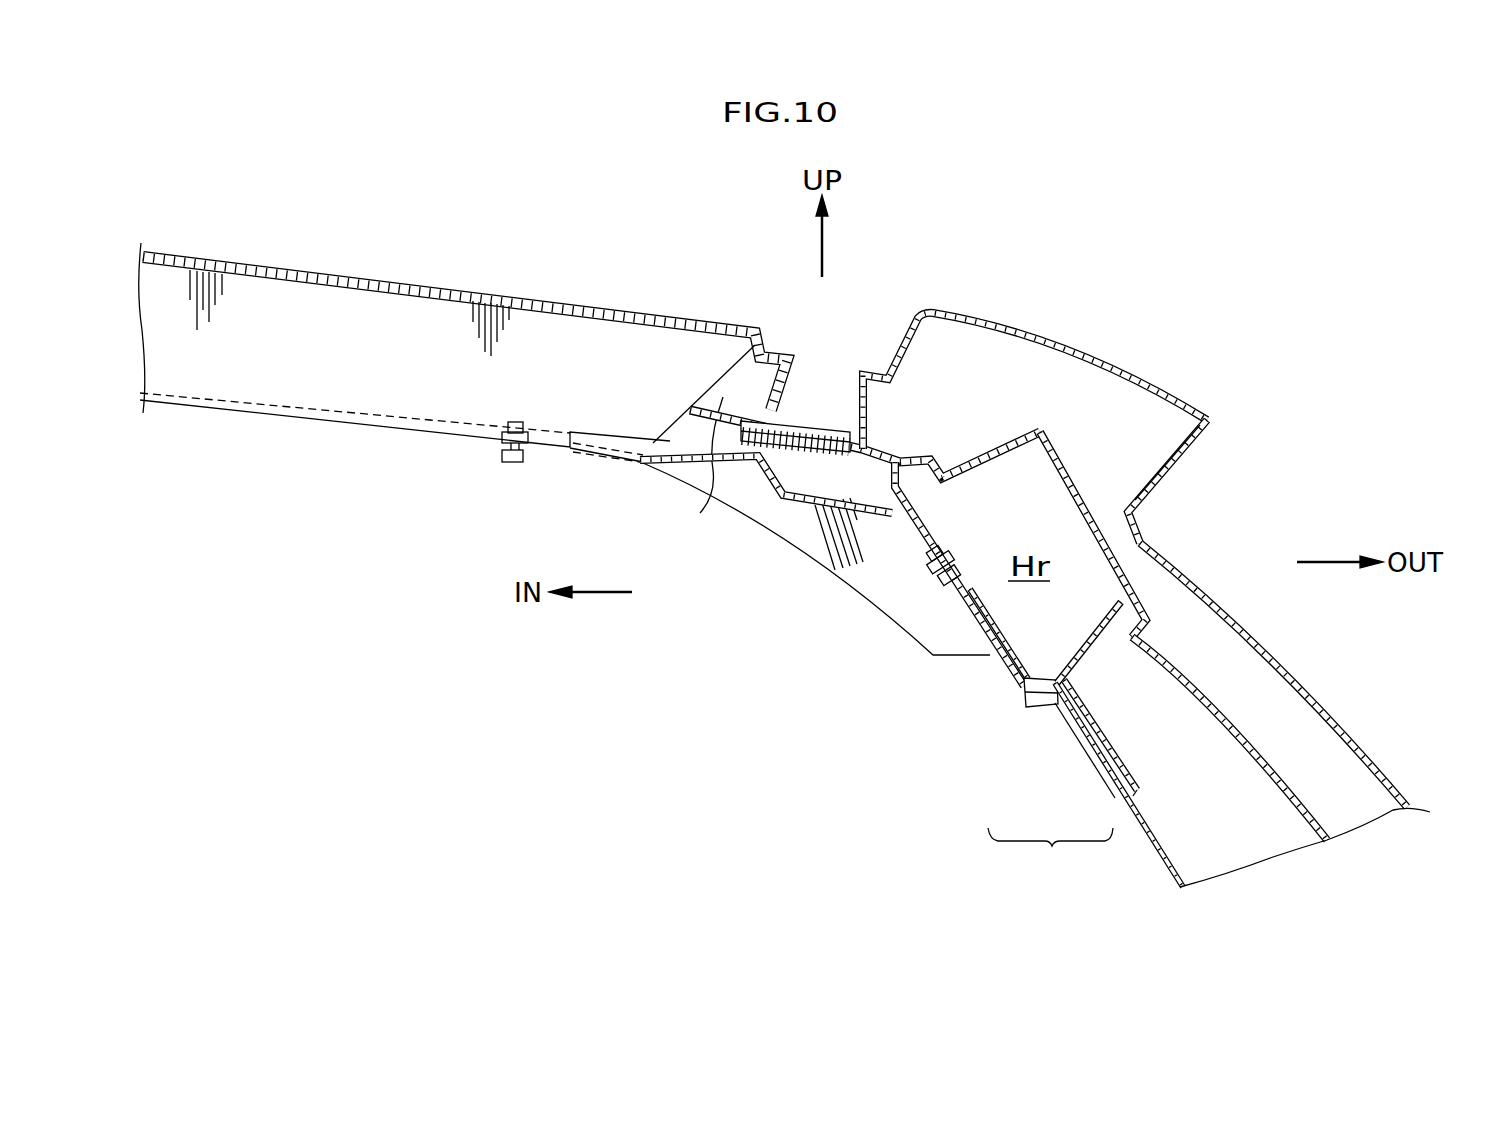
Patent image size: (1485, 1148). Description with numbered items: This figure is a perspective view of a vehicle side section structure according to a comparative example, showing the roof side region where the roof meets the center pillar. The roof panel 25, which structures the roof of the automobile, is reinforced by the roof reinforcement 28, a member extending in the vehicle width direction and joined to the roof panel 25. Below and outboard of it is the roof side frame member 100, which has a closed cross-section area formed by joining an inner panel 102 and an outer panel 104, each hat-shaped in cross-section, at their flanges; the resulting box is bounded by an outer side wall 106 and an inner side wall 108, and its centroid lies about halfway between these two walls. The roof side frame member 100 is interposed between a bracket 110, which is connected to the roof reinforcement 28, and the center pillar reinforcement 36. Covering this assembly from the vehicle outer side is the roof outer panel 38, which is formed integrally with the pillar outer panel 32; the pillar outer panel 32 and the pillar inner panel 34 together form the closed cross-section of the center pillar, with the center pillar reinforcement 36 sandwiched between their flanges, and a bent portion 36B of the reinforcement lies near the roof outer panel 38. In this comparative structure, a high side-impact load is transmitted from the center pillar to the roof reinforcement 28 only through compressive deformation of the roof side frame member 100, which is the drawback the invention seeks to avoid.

The roof panel 25 is at (397, 282).
The roof reinforcement 28 is at (321, 390).
The pillar outer panel 32 is at (1275, 657).
The pillar inner panel 34 is at (1177, 870).
The center pillar reinforcement 36 is at (1247, 740).
The bent portion of inner panel 36B is at (1110, 542).
The roof outer panel 38 is at (1065, 348).
The roof side frame member 100 is at (1050, 853).
The inner panel 102 is at (1025, 713).
The outer panel 104 is at (1094, 672).
The outer side wall 106 is at (1047, 450).
The inner side wall 108 is at (1005, 677).
The bracket 110 is at (745, 520).